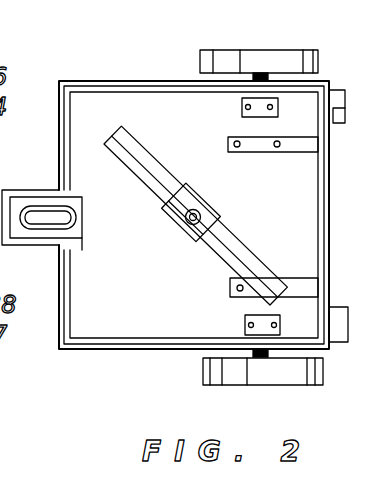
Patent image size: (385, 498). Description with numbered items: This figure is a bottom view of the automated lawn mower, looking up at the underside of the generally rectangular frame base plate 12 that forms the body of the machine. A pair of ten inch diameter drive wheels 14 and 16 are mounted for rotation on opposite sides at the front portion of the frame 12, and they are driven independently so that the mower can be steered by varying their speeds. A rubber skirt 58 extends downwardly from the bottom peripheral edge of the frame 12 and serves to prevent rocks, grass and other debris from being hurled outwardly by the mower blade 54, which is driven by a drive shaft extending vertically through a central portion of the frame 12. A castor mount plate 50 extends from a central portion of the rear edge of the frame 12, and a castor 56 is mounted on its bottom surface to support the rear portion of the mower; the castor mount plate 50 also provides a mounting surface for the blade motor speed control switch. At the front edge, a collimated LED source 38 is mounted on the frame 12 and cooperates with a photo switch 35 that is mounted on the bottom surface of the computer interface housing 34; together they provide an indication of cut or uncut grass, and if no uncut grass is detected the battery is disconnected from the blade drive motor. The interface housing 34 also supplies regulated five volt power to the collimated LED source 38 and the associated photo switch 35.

The frame base plate 12 is at (94, 81).
The drive wheel 14 is at (210, 63).
The drive wheel 16 is at (203, 372).
The computer interface housing 34 is at (365, 72).
The photo switch 35 is at (345, 124).
The collimated LED source 38 is at (343, 320).
The castor mount plate 50 is at (31, 191).
The mower blade 54 is at (205, 147).
The castor 56 is at (82, 239).
The rubber skirt 58 is at (125, 228).